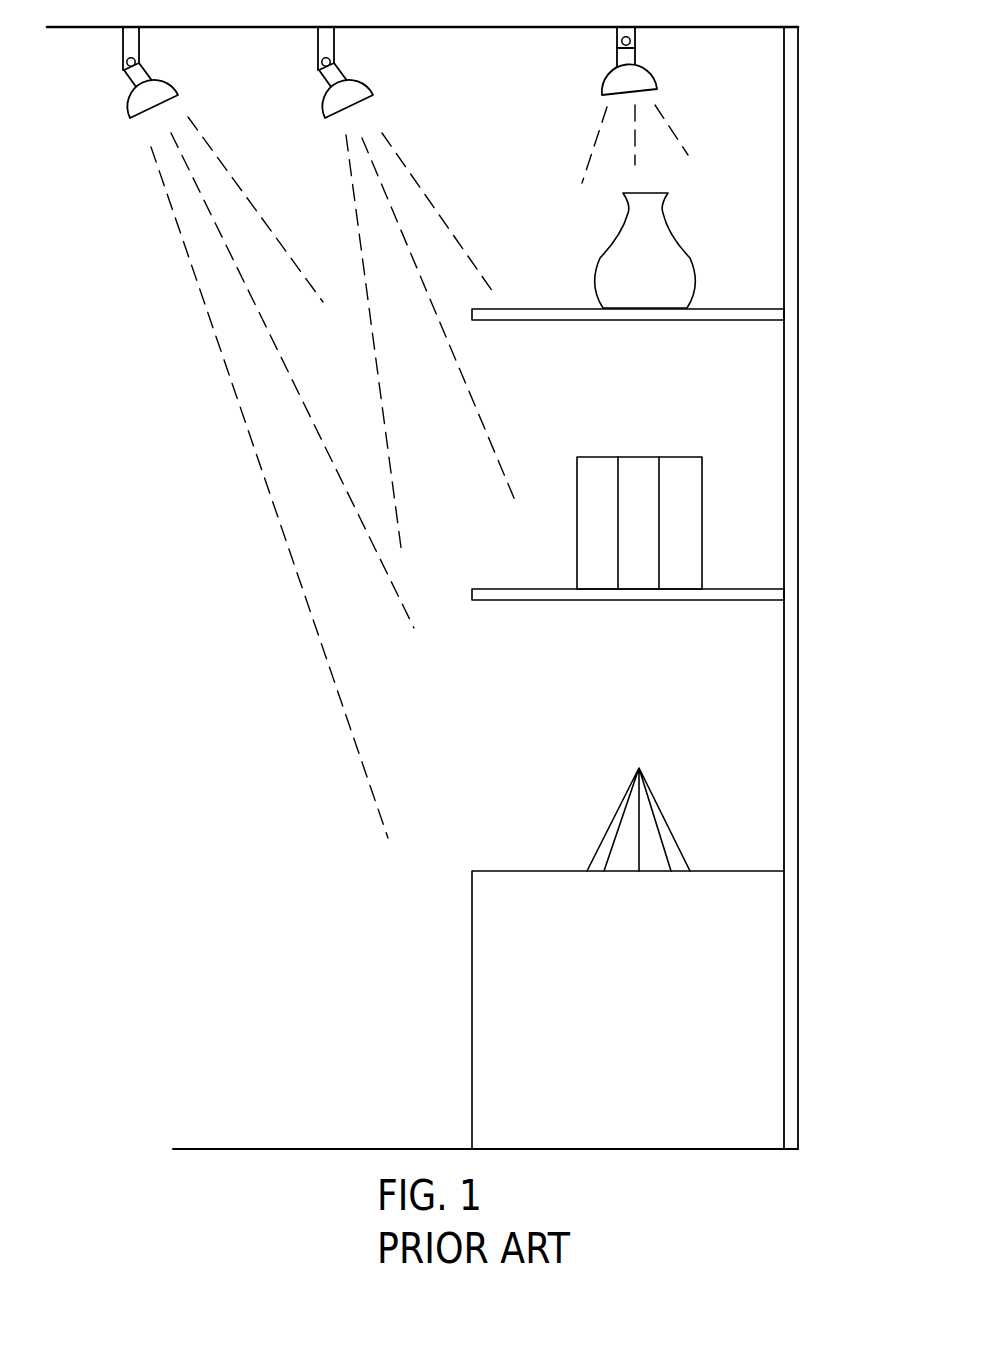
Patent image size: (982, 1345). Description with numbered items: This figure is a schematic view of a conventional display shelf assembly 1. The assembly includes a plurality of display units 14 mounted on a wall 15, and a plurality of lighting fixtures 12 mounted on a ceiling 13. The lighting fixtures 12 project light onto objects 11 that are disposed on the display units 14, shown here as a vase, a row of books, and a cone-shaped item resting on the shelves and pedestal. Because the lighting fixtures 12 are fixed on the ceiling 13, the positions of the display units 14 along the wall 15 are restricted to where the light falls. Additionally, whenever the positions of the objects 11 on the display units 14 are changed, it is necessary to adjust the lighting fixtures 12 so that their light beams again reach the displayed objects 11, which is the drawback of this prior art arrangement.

The display shelf assembly 1 is at (748, 156).
The objects 11 is at (608, 273).
The lighting fixtures 12 is at (137, 105).
The ceiling 13 is at (487, 30).
The display units 14 is at (550, 320).
The wall 15 is at (800, 530).